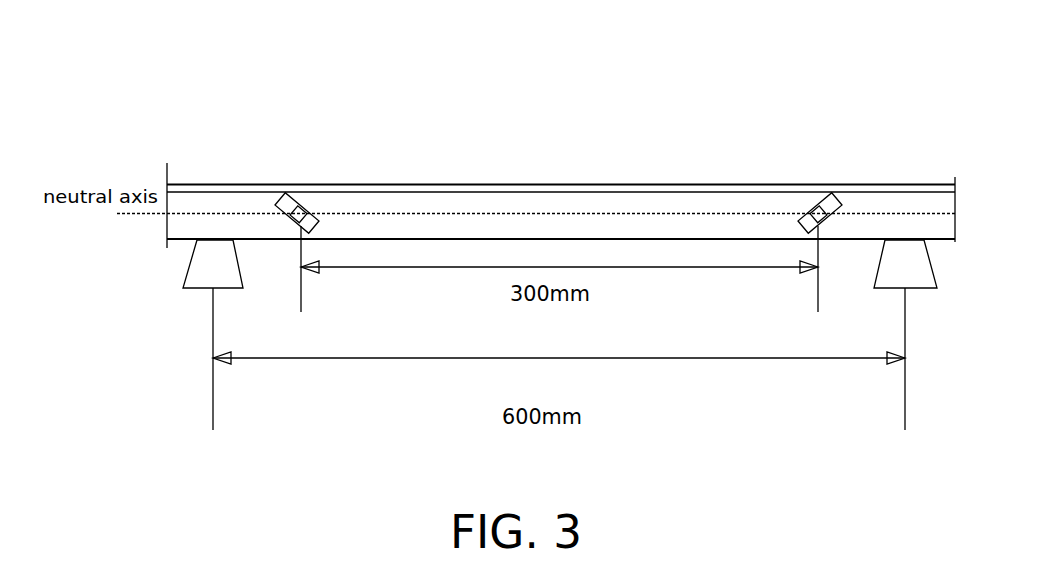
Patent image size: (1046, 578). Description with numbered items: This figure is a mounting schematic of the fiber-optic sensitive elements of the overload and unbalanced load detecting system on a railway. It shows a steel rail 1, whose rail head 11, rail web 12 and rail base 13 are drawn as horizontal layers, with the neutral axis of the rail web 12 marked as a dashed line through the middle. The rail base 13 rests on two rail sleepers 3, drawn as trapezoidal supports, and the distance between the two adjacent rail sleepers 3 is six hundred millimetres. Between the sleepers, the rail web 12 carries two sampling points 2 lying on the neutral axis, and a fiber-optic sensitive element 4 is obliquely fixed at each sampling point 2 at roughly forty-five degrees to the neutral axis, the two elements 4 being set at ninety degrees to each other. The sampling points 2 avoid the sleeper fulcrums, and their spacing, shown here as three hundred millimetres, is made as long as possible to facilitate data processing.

The steel rail 1 is at (536, 136).
The rail head 11 is at (630, 185).
The rail web 12 is at (667, 230).
The rail base 13 is at (457, 238).
The sampling point 2 is at (832, 193).
The fiber-optic sensitive element 4 is at (285, 193).
The rail sleeper 3 is at (200, 290).